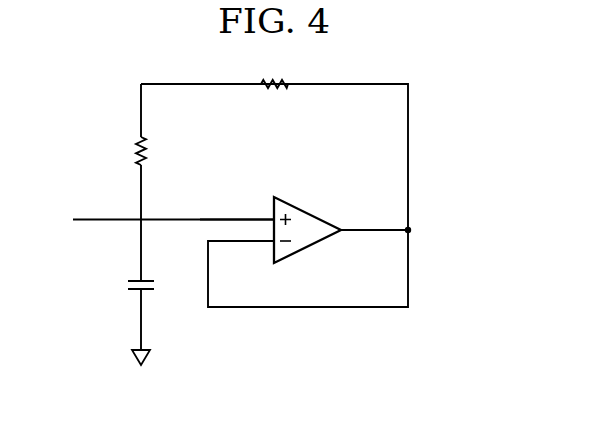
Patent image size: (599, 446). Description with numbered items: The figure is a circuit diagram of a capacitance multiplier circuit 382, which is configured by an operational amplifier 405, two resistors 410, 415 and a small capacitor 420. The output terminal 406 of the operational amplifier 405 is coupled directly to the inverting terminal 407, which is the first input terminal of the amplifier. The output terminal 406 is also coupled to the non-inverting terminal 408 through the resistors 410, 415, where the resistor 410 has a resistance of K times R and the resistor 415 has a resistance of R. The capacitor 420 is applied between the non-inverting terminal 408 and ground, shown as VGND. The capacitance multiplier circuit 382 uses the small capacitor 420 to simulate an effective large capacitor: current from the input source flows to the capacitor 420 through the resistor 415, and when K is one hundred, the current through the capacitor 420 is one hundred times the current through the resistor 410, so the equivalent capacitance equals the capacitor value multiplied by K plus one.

The capacitance multiplier circuit 382 is at (96, 73).
The resistor 415 is at (136, 147).
The resistor 410 is at (272, 92).
The operational amplifier 405 is at (313, 211).
The non-inverting terminal 408 is at (270, 212).
The inverting terminal 407 is at (270, 248).
The output terminal 406 is at (413, 234).
The capacitor 420 is at (128, 287).